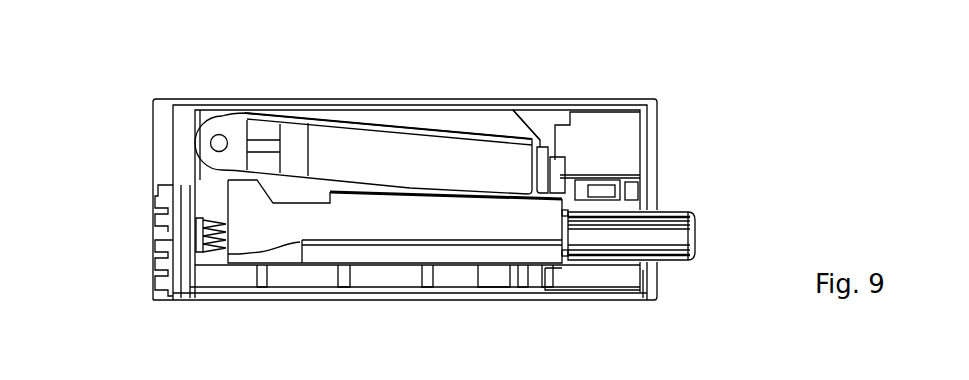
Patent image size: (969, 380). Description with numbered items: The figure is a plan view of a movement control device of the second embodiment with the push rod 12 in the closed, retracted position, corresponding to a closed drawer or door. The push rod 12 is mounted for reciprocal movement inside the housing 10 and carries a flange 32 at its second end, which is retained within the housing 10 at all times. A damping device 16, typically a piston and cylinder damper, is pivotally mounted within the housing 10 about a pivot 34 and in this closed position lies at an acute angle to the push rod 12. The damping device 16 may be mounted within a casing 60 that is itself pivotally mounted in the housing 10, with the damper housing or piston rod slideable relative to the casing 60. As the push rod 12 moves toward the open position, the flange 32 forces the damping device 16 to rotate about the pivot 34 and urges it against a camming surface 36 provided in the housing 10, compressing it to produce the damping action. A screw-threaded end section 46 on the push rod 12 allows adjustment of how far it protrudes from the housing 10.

The housing 10 is at (133, 127).
The push rod 12 is at (398, 252).
The damping device 16 is at (378, 156).
The flange 32 is at (240, 195).
The pivot 34 is at (216, 136).
The camming surface 36 is at (531, 129).
The screw-threaded end section 46 is at (699, 229).
The casing 60 is at (238, 126).